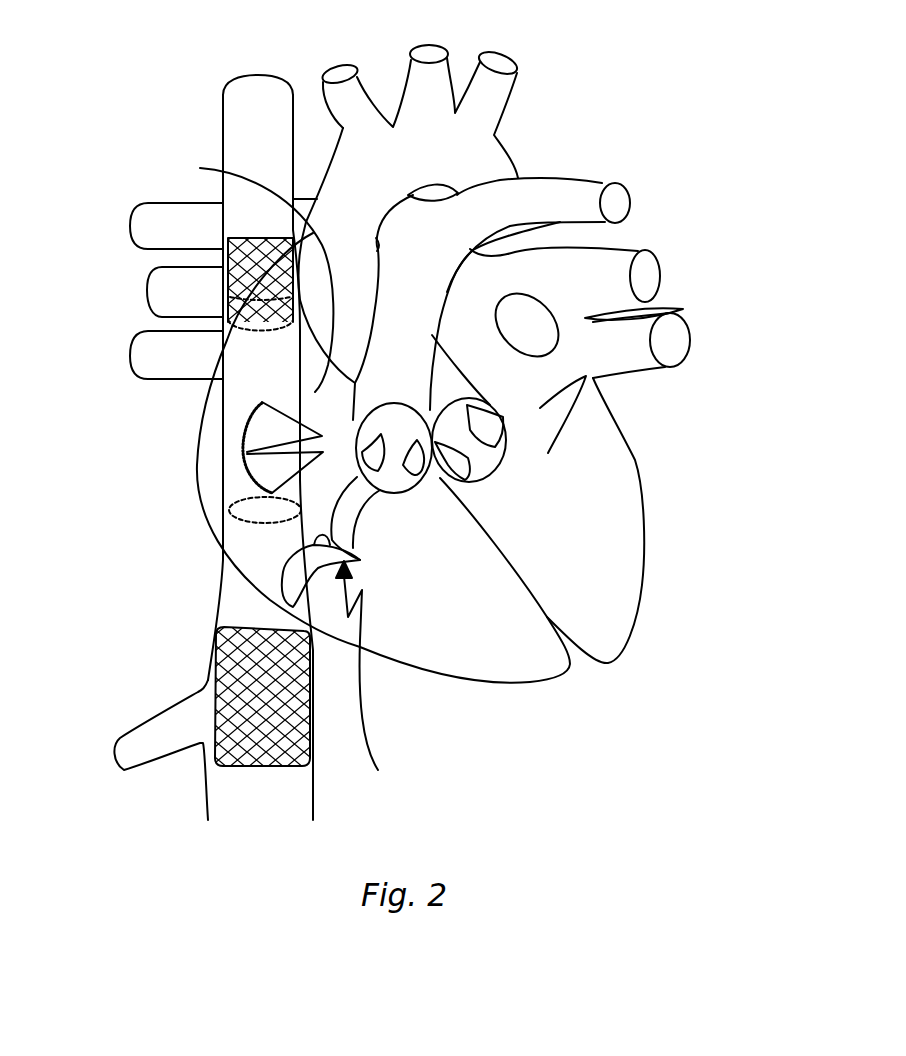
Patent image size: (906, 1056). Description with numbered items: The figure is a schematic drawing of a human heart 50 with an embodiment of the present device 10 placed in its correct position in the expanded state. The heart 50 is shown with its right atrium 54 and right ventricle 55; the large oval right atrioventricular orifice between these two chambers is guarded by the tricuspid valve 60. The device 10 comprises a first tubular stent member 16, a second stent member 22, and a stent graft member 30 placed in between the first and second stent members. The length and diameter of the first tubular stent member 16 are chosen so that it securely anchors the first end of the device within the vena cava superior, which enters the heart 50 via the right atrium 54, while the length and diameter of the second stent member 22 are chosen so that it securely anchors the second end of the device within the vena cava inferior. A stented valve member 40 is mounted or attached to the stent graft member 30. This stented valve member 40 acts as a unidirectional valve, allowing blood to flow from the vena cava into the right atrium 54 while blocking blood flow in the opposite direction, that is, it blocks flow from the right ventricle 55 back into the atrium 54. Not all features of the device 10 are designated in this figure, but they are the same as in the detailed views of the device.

The device 10 is at (180, 572).
The first tubular stent member 16 is at (232, 280).
The second stent member 22 is at (228, 667).
The stent graft member 30 is at (237, 592).
The stented valve member 40 is at (244, 440).
The human heart 50 is at (688, 470).
The right atrium 54 is at (200, 168).
The right ventricle 55 is at (458, 655).
The tricuspid valve 60 is at (362, 683).